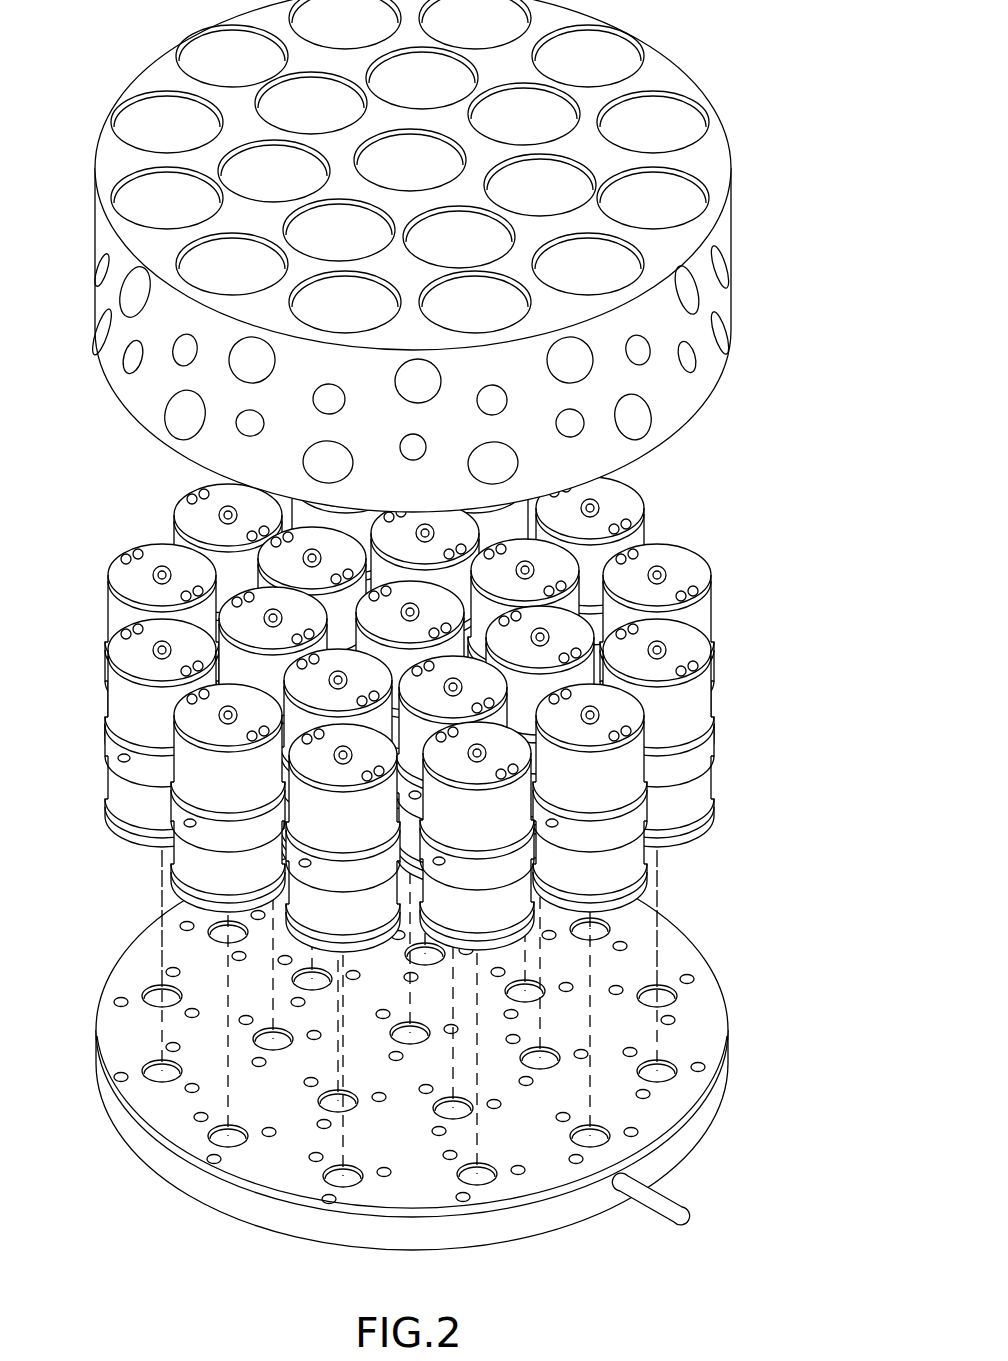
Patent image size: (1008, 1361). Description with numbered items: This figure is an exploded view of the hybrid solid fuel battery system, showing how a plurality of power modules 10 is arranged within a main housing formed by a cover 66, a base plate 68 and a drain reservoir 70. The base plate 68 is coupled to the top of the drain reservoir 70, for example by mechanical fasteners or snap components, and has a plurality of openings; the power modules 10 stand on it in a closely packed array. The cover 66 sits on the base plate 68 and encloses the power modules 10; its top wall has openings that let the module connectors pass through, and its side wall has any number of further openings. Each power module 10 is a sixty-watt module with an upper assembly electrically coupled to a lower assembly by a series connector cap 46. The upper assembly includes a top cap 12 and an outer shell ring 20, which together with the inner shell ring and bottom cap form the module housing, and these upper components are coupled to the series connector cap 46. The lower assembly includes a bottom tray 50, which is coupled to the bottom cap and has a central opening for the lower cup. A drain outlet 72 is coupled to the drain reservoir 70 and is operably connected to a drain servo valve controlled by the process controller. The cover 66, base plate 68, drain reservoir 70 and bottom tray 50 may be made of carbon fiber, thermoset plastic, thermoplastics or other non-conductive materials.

The power module 10 is at (410, 692).
The top cap 12 is at (120, 573).
The outer shell ring 20 is at (113, 690).
The series connector cap 46 is at (108, 742).
The bottom tray 50 is at (130, 852).
The cover 66 is at (187, 84).
The base plate 68 is at (130, 990).
The drain reservoir 70 is at (213, 1195).
The drain outlet 72 is at (660, 1212).